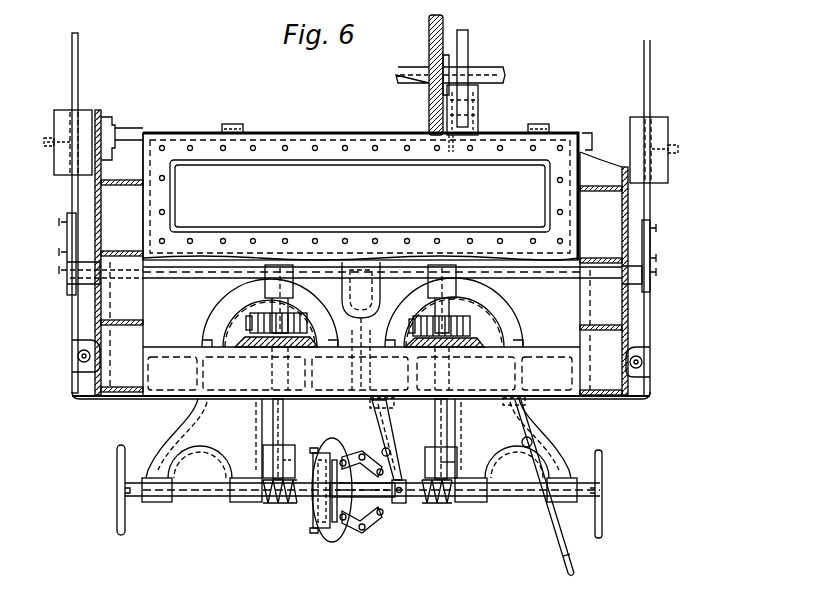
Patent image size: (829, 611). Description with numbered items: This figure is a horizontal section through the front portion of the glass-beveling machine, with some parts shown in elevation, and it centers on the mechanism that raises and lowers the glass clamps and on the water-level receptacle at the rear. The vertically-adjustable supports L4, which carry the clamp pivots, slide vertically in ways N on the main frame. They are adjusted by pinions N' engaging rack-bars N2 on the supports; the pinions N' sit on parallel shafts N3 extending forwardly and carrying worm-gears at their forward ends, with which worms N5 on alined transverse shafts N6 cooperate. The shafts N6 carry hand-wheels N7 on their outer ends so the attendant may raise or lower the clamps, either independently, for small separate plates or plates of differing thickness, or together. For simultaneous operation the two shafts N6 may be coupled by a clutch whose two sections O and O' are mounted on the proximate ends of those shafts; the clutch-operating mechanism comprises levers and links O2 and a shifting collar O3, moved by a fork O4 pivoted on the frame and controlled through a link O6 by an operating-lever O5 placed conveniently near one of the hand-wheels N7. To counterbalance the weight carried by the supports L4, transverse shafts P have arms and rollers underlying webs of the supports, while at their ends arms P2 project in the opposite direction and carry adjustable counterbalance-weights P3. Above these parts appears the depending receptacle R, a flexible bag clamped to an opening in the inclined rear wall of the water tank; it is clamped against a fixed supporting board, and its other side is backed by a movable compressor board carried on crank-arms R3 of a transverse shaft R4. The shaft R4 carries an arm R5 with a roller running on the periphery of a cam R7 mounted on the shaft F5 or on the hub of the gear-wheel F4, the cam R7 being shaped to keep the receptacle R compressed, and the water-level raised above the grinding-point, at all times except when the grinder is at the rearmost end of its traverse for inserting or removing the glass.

The depending receptacle R is at (320, 150).
The crank-arms R3 is at (236, 124).
The transverse shaft R4 is at (590, 133).
The arm R5 is at (478, 112).
The cam R7 is at (464, 44).
The gear-wheel F4 is at (423, 75).
The shaft F5 is at (461, 60).
The transverse shafts P is at (175, 268).
The arms P2 is at (55, 208).
The adjustable counterbalance-weights P3 is at (12, 112).
The ways N is at (371, 348).
The pinions N' is at (364, 326).
The rack-bars N2 is at (407, 350).
The parallel shafts N3 is at (283, 428).
The worms N5 is at (450, 520).
The alined transverse shafts N6 is at (522, 497).
The hand-wheels N7 is at (128, 525).
The vertically-adjustable supports L4 is at (486, 362).
The clutch section O is at (324, 502).
The clutch section O' is at (362, 503).
The levers and links O2 is at (385, 540).
The shifting collar O3 is at (395, 505).
The fork O4 is at (372, 420).
The operating-lever O5 is at (555, 545).
The link O6 is at (510, 405).